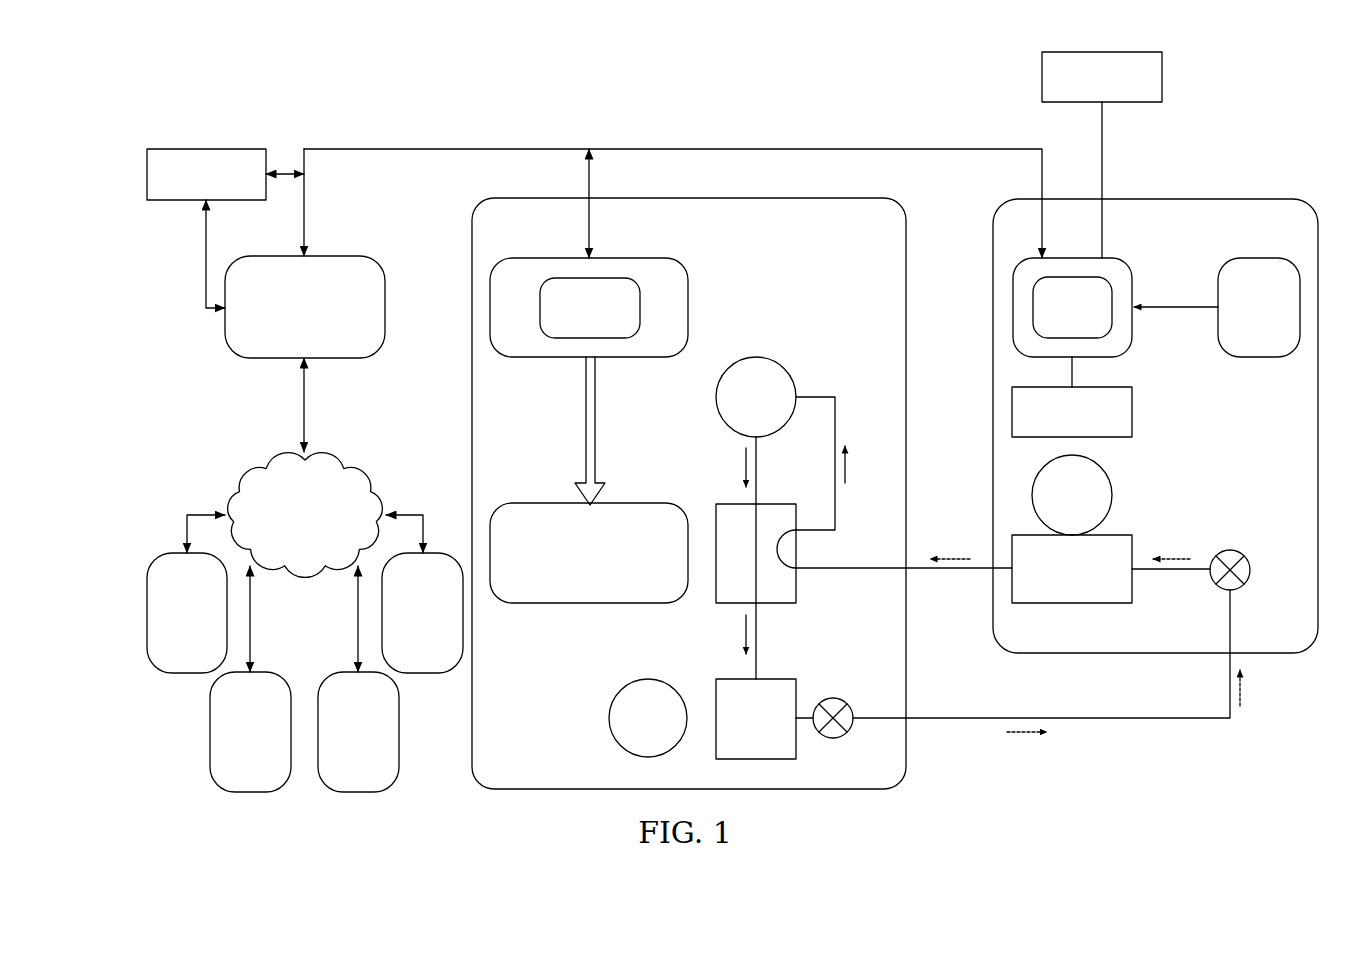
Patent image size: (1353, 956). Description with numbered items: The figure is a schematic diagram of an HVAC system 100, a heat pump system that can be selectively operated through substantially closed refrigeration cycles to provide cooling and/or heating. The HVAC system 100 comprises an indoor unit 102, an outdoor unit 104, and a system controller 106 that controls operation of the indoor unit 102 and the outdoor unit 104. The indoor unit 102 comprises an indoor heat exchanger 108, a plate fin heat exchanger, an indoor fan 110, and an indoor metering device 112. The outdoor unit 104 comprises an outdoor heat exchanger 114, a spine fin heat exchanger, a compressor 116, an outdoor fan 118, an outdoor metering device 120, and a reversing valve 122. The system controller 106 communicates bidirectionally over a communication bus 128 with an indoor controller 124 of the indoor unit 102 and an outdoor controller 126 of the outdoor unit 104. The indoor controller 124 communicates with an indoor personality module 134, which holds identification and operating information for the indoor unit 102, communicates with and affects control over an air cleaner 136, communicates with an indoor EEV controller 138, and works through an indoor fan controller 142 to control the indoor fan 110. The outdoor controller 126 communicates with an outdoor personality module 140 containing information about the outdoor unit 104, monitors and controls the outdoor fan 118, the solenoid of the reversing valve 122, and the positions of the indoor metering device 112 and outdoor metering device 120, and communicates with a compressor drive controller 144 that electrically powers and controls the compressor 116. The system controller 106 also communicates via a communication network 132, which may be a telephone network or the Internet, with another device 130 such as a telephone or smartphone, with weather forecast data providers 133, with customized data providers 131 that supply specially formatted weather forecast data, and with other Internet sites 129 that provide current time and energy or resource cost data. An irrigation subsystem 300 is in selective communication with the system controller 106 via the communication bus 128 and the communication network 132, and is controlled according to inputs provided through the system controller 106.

The HVAC system 100 is at (450, 100).
The indoor unit 102 is at (1232, 199).
The outdoor unit 104 is at (470, 255).
The system controller 106 is at (287, 321).
The indoor heat exchanger 108 is at (1054, 583).
The indoor fan 110 is at (1054, 509).
The indoor metering device 112 is at (1245, 585).
The outdoor heat exchanger 114 is at (738, 732).
The compressor 116 is at (738, 411).
The outdoor fan 118 is at (630, 732).
The outdoor metering device 120 is at (846, 733).
The reversing valve 122 is at (797, 580).
The indoor controller 124 is at (1134, 290).
The outdoor controller 126 is at (545, 258).
The communication bus 128 is at (673, 148).
The other Internet sites 129 is at (232, 746).
The other device 130 is at (340, 746).
The customized data providers 131 is at (169, 627).
The communication network 132 is at (287, 529).
The weather forecast data providers 133 is at (405, 627).
The indoor personality module 134 is at (1054, 322).
The air cleaner 136 is at (1084, 91).
The indoor EEV controller 138 is at (1241, 322).
The outdoor personality module 140 is at (572, 322).
The indoor fan controller 142 is at (1054, 426).
The compressor drive controller 144 is at (572, 567).
The irrigation subsystem 300 is at (188, 189).